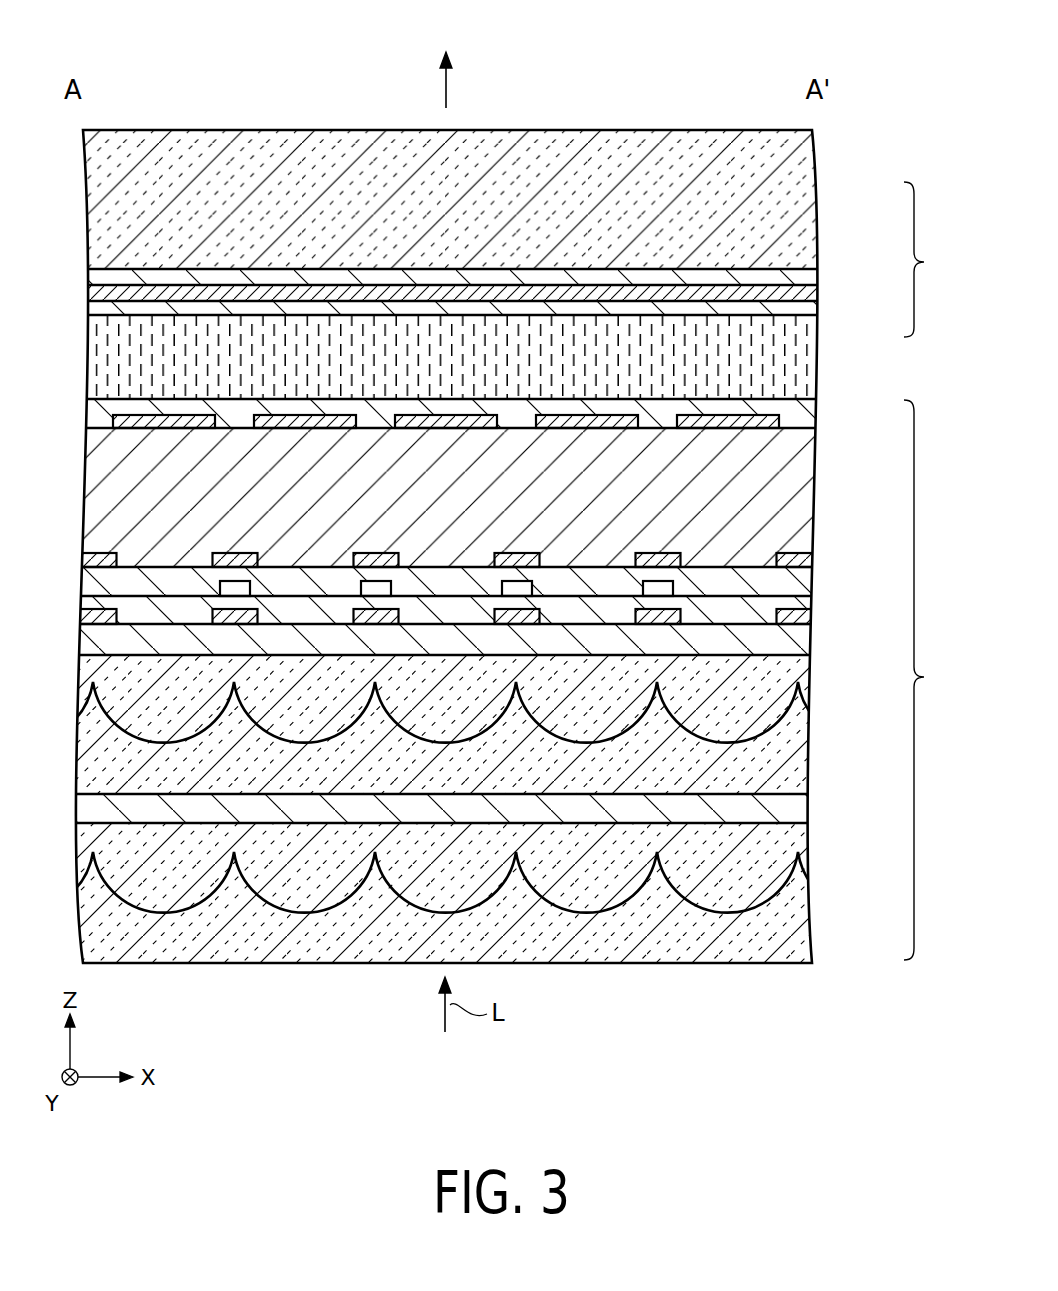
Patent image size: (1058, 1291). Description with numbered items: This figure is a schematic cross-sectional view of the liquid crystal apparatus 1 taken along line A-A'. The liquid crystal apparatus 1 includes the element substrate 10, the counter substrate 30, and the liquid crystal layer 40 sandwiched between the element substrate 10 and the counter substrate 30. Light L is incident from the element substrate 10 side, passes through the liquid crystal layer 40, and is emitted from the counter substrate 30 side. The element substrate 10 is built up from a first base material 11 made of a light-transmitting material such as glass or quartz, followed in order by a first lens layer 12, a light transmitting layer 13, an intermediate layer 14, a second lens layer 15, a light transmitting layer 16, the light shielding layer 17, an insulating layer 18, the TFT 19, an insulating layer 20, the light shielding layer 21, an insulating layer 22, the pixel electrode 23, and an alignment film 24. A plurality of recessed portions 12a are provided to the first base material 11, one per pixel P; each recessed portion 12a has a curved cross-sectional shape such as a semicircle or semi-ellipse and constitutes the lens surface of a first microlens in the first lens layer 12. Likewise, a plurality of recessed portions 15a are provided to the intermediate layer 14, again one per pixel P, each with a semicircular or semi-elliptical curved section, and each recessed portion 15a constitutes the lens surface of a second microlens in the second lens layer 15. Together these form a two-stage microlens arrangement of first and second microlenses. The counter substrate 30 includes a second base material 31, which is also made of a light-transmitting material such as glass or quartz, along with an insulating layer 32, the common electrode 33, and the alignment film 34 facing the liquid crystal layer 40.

The liquid crystal apparatus 1 is at (854, 61).
The element substrate 10 is at (934, 680).
The first base material 11 is at (806, 918).
The first lens layer 12 is at (806, 839).
The recessed portion 12a is at (572, 893).
The light transmitting layer 13 is at (806, 806).
The intermediate layer 14 is at (806, 758).
The second lens layer 15 is at (806, 670).
The recessed portion 15a is at (572, 723).
The light transmitting layer 16 is at (806, 640).
The light shielding layer 17 is at (670, 614).
The insulating layer 18 is at (806, 602).
The TFT 19 is at (670, 588).
The insulating layer 20 is at (806, 575).
The light shielding layer 21 is at (664, 554).
The insulating layer 22 is at (806, 506).
The pixel electrode 23 is at (592, 415).
The alignment film 24 is at (806, 406).
The counter substrate 30 is at (933, 259).
The second base material 31 is at (810, 190).
The insulating layer 32 is at (810, 278).
The common electrode 33 is at (810, 292).
The alignment film 34 is at (810, 308).
The liquid crystal layer 40 is at (812, 358).